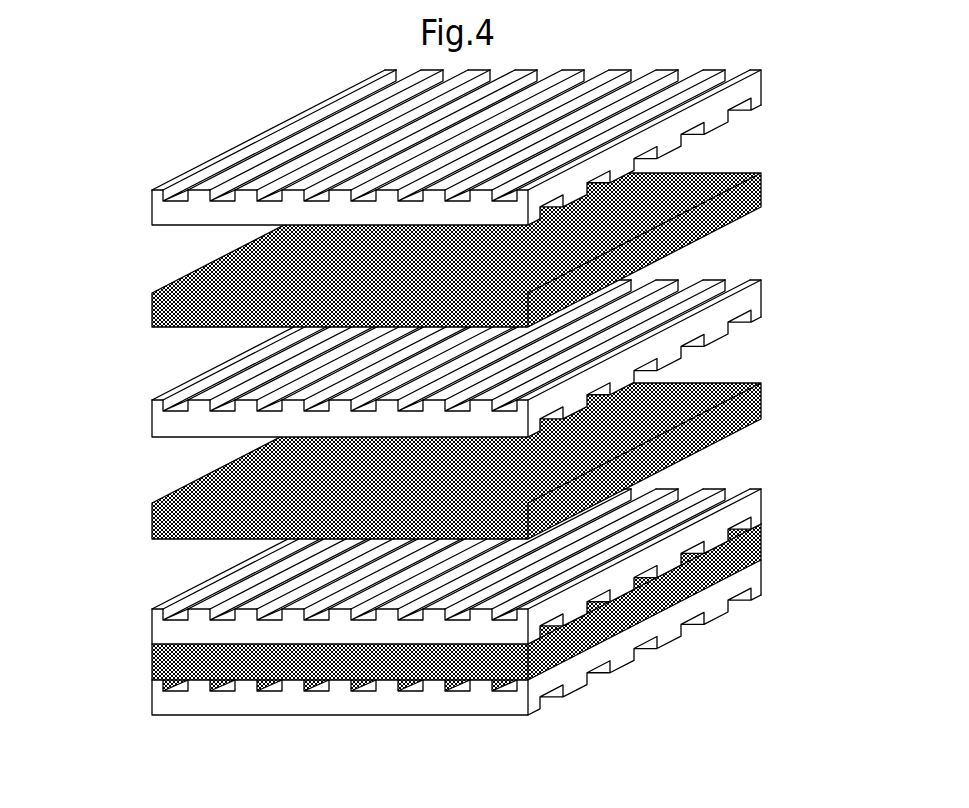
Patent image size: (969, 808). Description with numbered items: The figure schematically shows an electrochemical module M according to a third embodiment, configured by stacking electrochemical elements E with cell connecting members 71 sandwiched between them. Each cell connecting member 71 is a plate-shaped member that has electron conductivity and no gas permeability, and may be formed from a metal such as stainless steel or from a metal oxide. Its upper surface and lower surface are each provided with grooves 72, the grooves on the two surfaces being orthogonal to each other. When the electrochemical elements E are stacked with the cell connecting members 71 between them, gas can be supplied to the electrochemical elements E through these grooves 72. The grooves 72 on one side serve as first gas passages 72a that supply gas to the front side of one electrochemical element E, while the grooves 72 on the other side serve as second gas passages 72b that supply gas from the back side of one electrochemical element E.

The electrochemical module M is at (140, 123).
The cell connecting member 71 is at (143, 211).
The electrochemical element E is at (143, 312).
The groove 72 is at (522, 378).
The first gas passage 72a is at (742, 109).
The second gas passage 72b is at (733, 74).